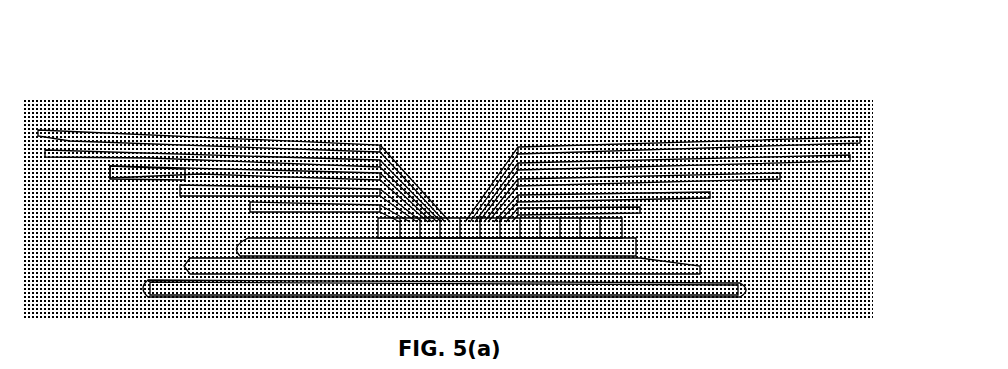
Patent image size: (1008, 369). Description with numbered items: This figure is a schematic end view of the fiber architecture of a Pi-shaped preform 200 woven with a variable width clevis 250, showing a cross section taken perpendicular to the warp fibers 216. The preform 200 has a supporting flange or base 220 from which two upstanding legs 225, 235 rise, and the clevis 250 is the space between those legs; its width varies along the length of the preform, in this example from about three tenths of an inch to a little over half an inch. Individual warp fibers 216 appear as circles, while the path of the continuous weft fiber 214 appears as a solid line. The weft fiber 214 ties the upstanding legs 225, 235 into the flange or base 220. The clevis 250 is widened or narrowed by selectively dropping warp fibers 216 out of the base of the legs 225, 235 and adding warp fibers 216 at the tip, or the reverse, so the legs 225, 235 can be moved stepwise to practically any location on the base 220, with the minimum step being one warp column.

The preform 200 is at (502, 99).
The upstanding leg 225 is at (283, 141).
The upstanding leg 235 is at (593, 142).
The variable width clevis 250 is at (446, 217).
The warp fibers 216 is at (130, 168).
The weft fiber 214 is at (670, 260).
The flange or base 220 is at (607, 262).